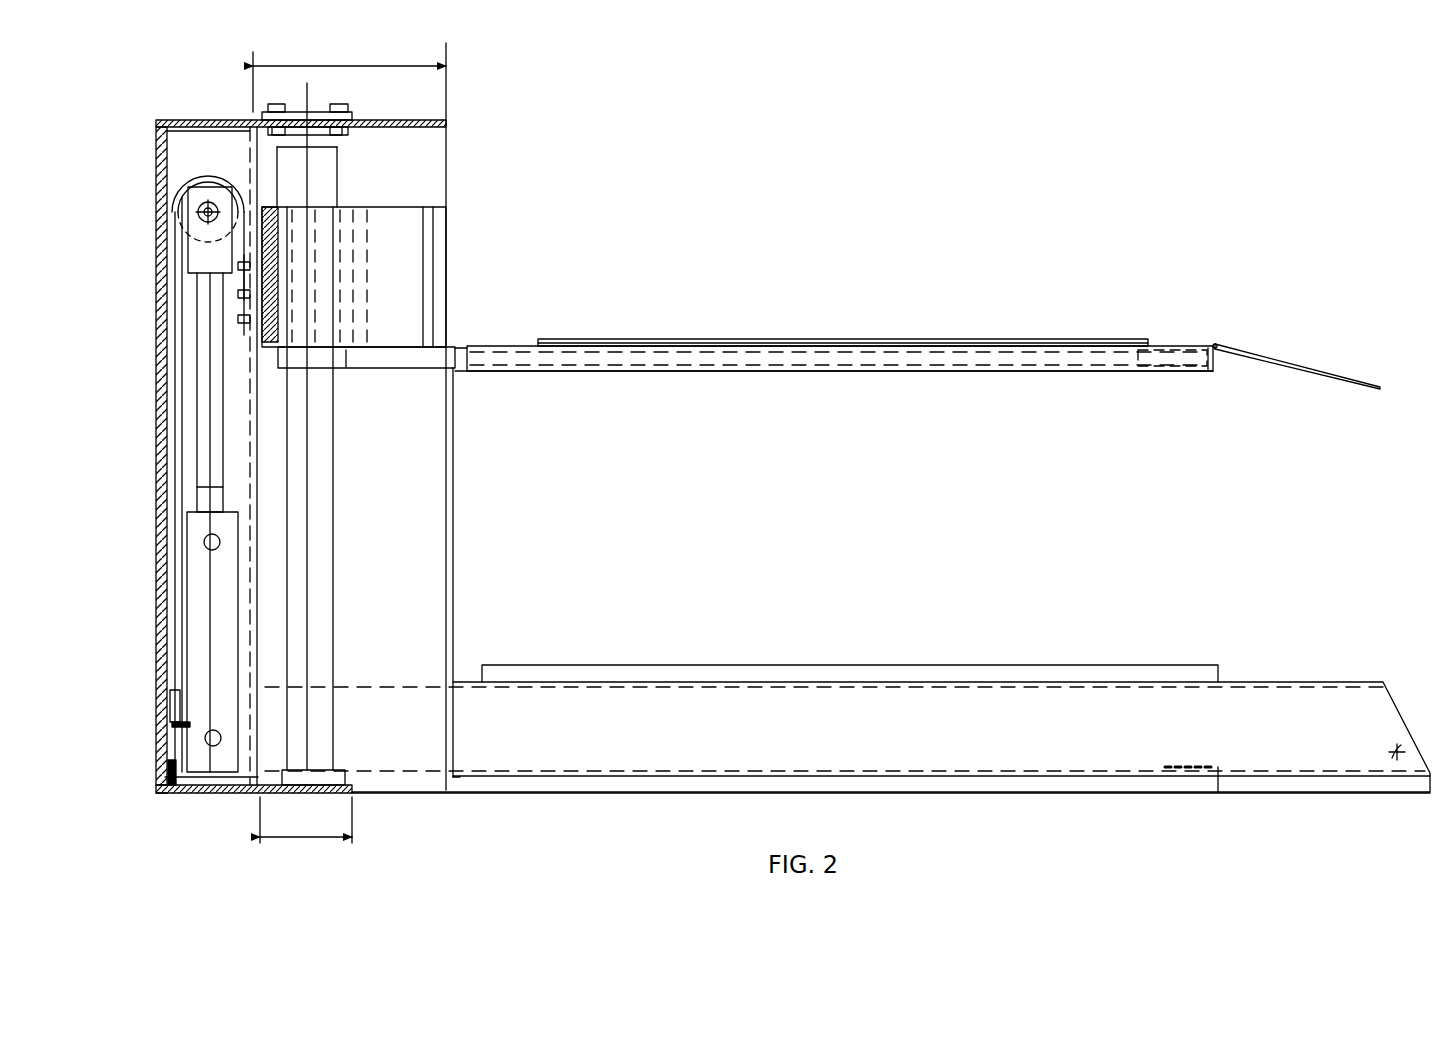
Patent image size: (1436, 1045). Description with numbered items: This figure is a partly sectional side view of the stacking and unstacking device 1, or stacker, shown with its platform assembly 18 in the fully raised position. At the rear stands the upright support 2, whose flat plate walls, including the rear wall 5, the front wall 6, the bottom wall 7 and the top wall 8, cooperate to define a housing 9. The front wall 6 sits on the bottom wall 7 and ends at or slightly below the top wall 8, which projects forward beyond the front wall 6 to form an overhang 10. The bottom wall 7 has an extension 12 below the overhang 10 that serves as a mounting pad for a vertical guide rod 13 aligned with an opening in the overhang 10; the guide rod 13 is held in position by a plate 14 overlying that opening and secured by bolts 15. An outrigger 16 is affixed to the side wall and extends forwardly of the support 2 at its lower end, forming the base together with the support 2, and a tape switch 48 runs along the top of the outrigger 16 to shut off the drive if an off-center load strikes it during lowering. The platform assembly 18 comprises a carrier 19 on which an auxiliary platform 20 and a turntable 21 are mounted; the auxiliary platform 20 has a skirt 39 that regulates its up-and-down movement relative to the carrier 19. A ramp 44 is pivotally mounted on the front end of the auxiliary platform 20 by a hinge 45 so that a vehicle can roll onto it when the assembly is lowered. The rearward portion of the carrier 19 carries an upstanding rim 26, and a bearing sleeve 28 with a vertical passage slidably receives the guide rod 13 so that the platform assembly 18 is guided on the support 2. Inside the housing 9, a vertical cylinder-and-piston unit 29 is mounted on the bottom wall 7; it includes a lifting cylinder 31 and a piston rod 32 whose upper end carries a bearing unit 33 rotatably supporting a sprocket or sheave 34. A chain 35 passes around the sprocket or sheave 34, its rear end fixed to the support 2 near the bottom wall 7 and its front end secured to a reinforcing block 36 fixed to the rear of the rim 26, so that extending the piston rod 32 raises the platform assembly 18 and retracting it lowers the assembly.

The stacking and unstacking device 1 is at (672, 805).
The upright support 2 is at (157, 795).
The rear wall 5 is at (156, 386).
The front wall 6 is at (258, 412).
The bottom wall 7 is at (200, 795).
The top wall 8 is at (214, 120).
The housing 9 is at (214, 161).
The overhang 10 is at (308, 66).
The extension 12 is at (302, 840).
The vertical guide rod 13 is at (335, 473).
The plate 14 is at (347, 117).
The bolt 15 is at (340, 108).
The outrigger 16 is at (1328, 682).
The platform assembly 18 is at (1015, 311).
The carrier 19 is at (370, 368).
The auxiliary platform 20 is at (1174, 348).
The turntable 21 is at (1148, 338).
The rim 26 is at (407, 207).
The bearing sleeve 28 is at (338, 158).
The cylinder-and-piston unit 29 is at (254, 488).
The lifting cylinder 31 is at (240, 611).
The piston rod 32 is at (197, 452).
The bearing unit 33 is at (186, 263).
The sprocket or sheave 34 is at (172, 201).
The chain 35 is at (175, 323).
The reinforcing block 36 is at (268, 343).
The skirt 39 is at (1097, 372).
The ramp 44 is at (1323, 378).
The hinge 45 is at (1215, 344).
The tape switch 48 is at (1168, 665).